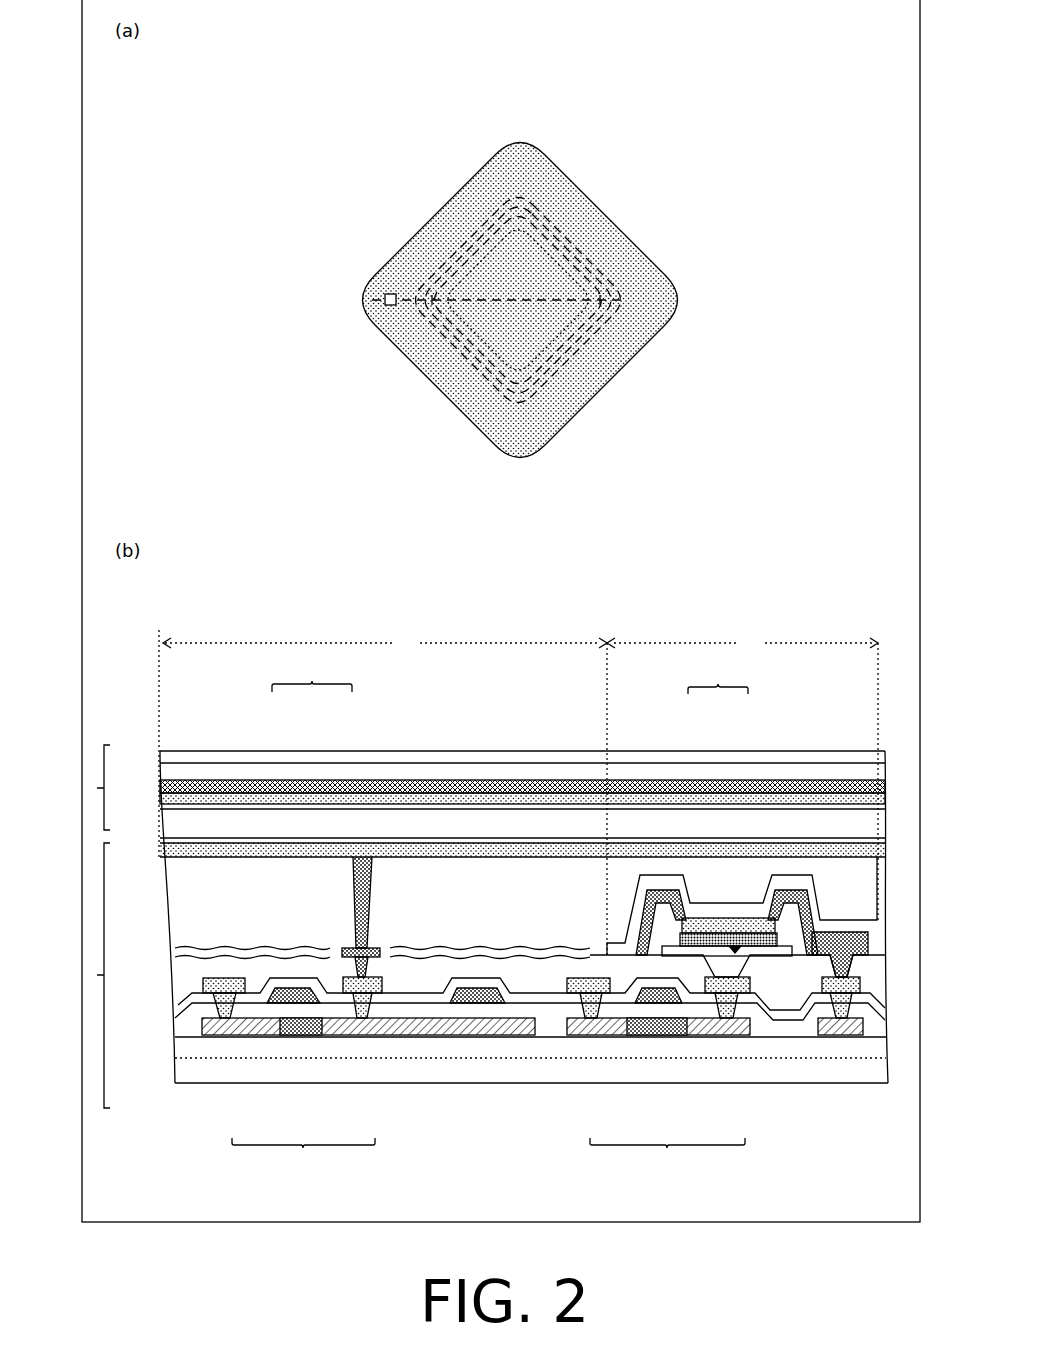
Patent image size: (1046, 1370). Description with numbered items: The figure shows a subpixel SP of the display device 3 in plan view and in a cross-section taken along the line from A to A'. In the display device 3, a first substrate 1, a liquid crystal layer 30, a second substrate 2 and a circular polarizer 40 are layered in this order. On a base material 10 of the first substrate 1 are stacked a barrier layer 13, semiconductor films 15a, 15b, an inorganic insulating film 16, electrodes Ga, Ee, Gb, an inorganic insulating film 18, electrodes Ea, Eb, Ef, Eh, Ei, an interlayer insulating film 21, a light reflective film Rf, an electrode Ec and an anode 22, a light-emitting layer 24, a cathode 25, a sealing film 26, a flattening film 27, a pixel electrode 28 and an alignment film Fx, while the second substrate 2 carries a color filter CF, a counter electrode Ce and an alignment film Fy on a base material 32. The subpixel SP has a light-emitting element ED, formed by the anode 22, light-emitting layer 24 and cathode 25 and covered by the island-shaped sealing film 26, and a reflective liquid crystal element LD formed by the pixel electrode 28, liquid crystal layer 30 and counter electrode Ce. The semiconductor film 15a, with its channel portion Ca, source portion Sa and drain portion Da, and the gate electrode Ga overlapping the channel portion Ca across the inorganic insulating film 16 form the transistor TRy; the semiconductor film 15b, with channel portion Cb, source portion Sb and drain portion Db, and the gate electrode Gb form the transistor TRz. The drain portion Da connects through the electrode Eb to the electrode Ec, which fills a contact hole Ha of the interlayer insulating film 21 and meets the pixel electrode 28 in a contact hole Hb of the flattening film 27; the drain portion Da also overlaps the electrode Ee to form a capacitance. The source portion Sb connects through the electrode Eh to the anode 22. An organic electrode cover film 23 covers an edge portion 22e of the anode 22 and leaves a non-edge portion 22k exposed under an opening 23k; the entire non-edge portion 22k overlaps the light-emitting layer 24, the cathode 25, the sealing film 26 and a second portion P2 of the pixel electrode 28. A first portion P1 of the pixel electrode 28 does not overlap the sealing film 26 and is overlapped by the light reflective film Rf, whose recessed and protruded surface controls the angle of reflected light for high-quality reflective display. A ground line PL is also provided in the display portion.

The subpixel SP is at (531, 90).
The pixel electrode 28 is at (562, 158).
The sealing film 26 is at (577, 242).
The cathode 25 is at (597, 270).
The light-emitting layer 24 is at (592, 323).
The electrode cover film 23 is at (662, 908).
The anode 22 is at (525, 375).
The non-edge portion 22k is at (510, 325).
The edge portion 22e is at (503, 365).
The opening 23k is at (589, 434).
The section line A is at (381, 575).
The section line A' is at (769, 605).
The contact hole Hb is at (390, 306).
The display device 3 is at (572, 614).
The first portion P1 is at (385, 795).
The second portion P2 is at (742, 644).
The reflective liquid crystal element LD is at (312, 672).
The light-emitting element ED is at (718, 674).
The circular polarizer 40 is at (160, 752).
The base material 32 is at (160, 766).
The color filter CF is at (160, 787).
The counter electrode Ce is at (160, 801).
The alignment film Fy is at (160, 821).
The liquid crystal layer 30 is at (338, 826).
The alignment film Fx is at (160, 855).
The flattening film 27 is at (165, 899).
The light reflective film Rf is at (170, 949).
The interlayer insulating film 21 is at (172, 969).
The inorganic insulating film 18 is at (174, 1013).
The inorganic insulating film 16 is at (174, 1032).
The barrier layer 13 is at (174, 1056).
The base material 10 is at (174, 1077).
The second substrate 2 is at (96, 787).
The first substrate 1 is at (96, 975).
The source portion Sa is at (222, 1037).
The channel portion Ca is at (268, 1027).
The gate electrode Ga is at (284, 1005).
The semiconductor film 15a is at (310, 1040).
The drain portion Da is at (366, 1020).
The contact hole Ha is at (372, 965).
The transistor TRy is at (303, 1156).
The electrode Ea is at (226, 993).
The electrode Eb is at (343, 982).
The electrode Ec is at (378, 956).
The electrode Ee is at (492, 993).
The electrode Ef is at (591, 955).
The drain portion Db is at (590, 1020).
The channel portion Cb is at (637, 1028).
The gate electrode Gb is at (650, 1005).
The semiconductor film 15b is at (673, 1040).
The source portion Sb is at (726, 1020).
The electrode Eh is at (752, 985).
The electrode Ei is at (822, 990).
The ground line PL is at (853, 1037).
The transistor TRz is at (667, 1157).